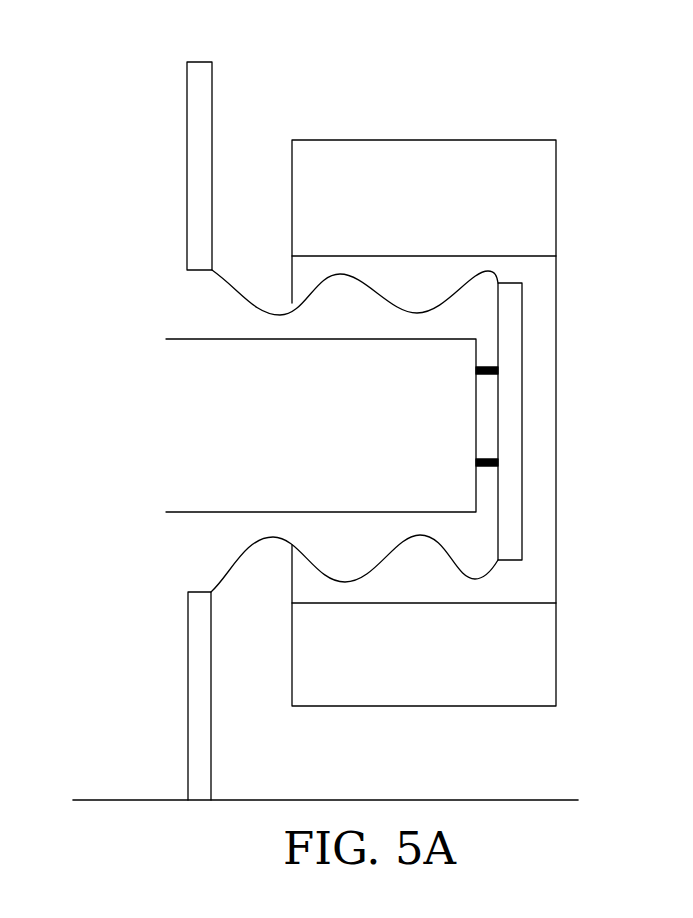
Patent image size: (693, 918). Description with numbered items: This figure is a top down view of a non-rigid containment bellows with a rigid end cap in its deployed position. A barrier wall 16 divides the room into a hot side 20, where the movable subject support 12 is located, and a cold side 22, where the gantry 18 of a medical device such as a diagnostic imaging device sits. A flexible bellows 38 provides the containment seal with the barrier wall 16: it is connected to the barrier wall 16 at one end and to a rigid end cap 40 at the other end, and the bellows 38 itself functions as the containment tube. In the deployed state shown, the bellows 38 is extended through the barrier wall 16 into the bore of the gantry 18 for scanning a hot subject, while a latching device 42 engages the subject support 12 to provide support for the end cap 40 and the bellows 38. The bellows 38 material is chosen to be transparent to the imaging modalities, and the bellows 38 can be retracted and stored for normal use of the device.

The subject support 12 is at (193, 512).
The barrier wall 16 is at (212, 117).
The gantry 18 is at (473, 140).
The hot side 20 is at (110, 443).
The cold side 22 is at (362, 107).
The flexible bellows 38 is at (223, 283).
The end cap 40 is at (522, 465).
The latching device 42 is at (498, 462).